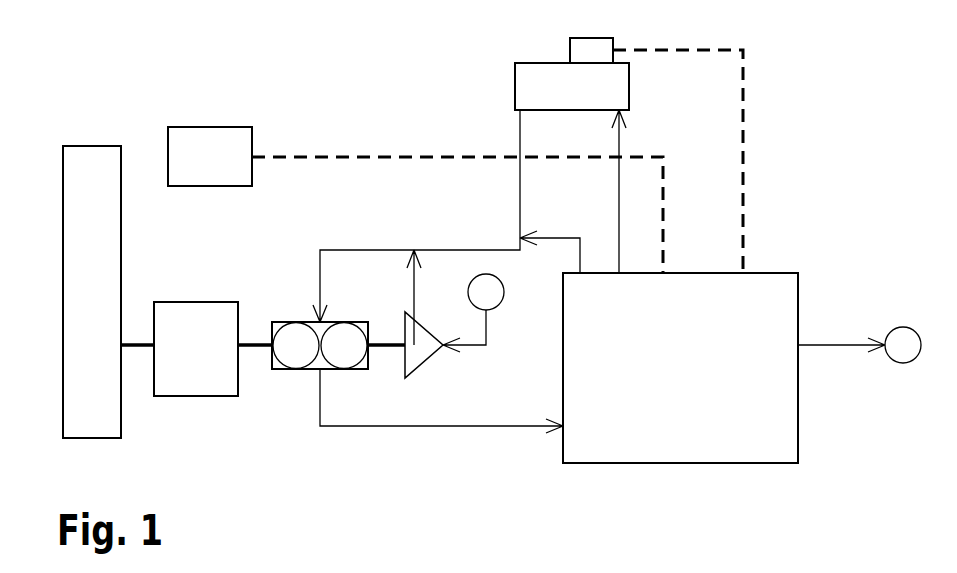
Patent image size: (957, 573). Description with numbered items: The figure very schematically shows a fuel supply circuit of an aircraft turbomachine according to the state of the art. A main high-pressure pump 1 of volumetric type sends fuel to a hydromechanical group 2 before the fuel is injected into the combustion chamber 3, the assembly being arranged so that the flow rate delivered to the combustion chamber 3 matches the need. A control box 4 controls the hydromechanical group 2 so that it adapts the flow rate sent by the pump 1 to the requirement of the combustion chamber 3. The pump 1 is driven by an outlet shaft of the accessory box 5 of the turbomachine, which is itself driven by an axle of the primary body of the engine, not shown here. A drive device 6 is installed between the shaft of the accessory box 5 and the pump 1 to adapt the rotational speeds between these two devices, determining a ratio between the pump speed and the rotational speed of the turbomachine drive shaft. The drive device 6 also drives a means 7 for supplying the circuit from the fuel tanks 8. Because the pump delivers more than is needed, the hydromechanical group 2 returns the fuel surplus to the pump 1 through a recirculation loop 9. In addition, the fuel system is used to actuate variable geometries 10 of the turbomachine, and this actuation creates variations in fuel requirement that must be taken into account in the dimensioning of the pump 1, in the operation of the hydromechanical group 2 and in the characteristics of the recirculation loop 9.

The main high-pressure pump 1 is at (280, 372).
The hydromechanical group 2 is at (638, 420).
The combustion chamber 3 is at (859, 345).
The control box 4 is at (192, 150).
The accessory box 5 is at (95, 220).
The drive device 6 is at (190, 372).
The means for supplying the circuit 7 is at (417, 355).
The fuel tanks 8 is at (473, 313).
The recirculation loop 9 is at (560, 238).
The variable geometries 10 is at (535, 80).